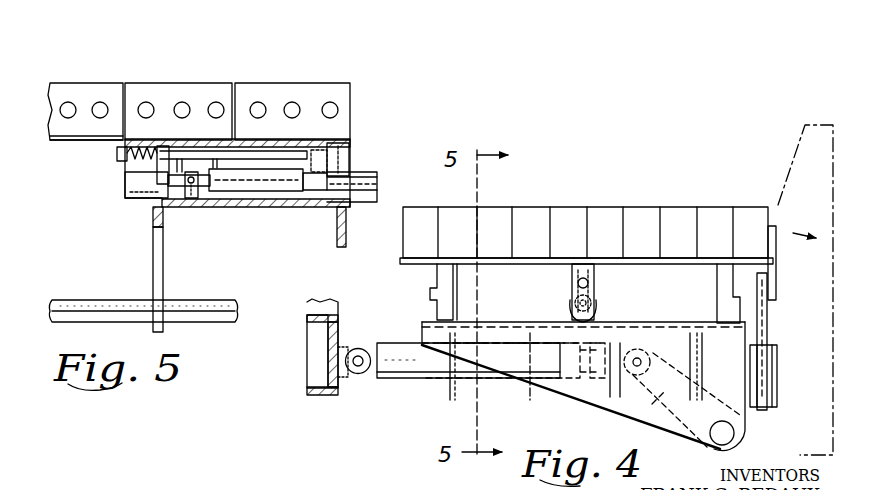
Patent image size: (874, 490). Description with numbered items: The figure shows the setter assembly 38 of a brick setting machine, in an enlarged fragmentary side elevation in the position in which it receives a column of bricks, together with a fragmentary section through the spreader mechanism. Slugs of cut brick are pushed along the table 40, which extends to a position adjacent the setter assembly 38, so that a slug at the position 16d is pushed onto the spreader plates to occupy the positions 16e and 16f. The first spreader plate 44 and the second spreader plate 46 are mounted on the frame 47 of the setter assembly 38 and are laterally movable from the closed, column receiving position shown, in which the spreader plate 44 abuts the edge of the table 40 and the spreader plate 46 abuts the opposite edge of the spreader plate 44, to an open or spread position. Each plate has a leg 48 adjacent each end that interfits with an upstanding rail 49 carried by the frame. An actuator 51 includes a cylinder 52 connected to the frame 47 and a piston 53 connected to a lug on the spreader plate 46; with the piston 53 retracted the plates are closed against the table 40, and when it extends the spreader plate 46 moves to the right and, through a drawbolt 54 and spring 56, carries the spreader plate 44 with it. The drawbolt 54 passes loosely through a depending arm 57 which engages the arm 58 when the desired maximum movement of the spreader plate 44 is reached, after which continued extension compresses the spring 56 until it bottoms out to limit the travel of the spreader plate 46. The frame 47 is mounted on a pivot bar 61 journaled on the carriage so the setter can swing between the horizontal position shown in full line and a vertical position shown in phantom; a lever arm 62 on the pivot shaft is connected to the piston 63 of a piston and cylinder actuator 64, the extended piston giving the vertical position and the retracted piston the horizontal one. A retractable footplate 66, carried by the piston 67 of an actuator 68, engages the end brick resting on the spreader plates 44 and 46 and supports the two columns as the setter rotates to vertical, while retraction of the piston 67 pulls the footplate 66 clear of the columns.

In FIG. 5, the slug position 16d is at (78, 92).
In FIG. 5, the slug position 16e is at (172, 92).
In FIG. 5, the slug position 16f is at (290, 92).
In FIG. 5, the setter assembly 38 is at (150, 226).
In FIG. 4, the setter assembly 38 is at (520, 393).
In FIG. 5, the table 40 is at (80, 143).
In FIG. 5, the first spreader plate 44 is at (196, 140).
In FIG. 5, the second spreader plate 46 is at (345, 138).
In FIG. 4, the second spreader plate 46 is at (533, 266).
In FIG. 5, the frame 47 is at (213, 208).
In FIG. 4, the frame 47 is at (797, 148).
In FIG. 5, the leg 48 is at (342, 162).
In FIG. 4, the leg 48 is at (437, 276).
In FIG. 5, the upstanding rail 49 is at (377, 188).
In FIG. 4, the upstanding rail 49 is at (437, 306).
In FIG. 5, the actuator 51 is at (258, 194).
In FIG. 4, the actuator 51 is at (598, 298).
In FIG. 5, the cylinder 52 is at (265, 192).
In FIG. 5, the piston 53 is at (300, 192).
In FIG. 5, the drawbolt 54 is at (262, 152).
In FIG. 4, the drawbolt 54 is at (590, 270).
In FIG. 5, the spring 56 is at (128, 176).
In FIG. 5, the depending arm 57 is at (160, 180).
In FIG. 4, the depending arm 57 is at (575, 270).
In FIG. 5, the arm 58 is at (190, 200).
In FIG. 4, the arm 58 is at (570, 313).
In FIG. 5, the pivot bar 61 is at (212, 315).
In FIG. 4, the pivot bar 61 is at (735, 433).
In FIG. 4, the lever arm 62 is at (642, 428).
In FIG. 4, the piston 63 is at (587, 394).
In FIG. 4, the piston and cylinder actuator 64 is at (435, 380).
In FIG. 4, the retractable footplate 66 is at (776, 262).
In FIG. 4, the piston 67 is at (768, 325).
In FIG. 4, the actuator 68 is at (772, 372).